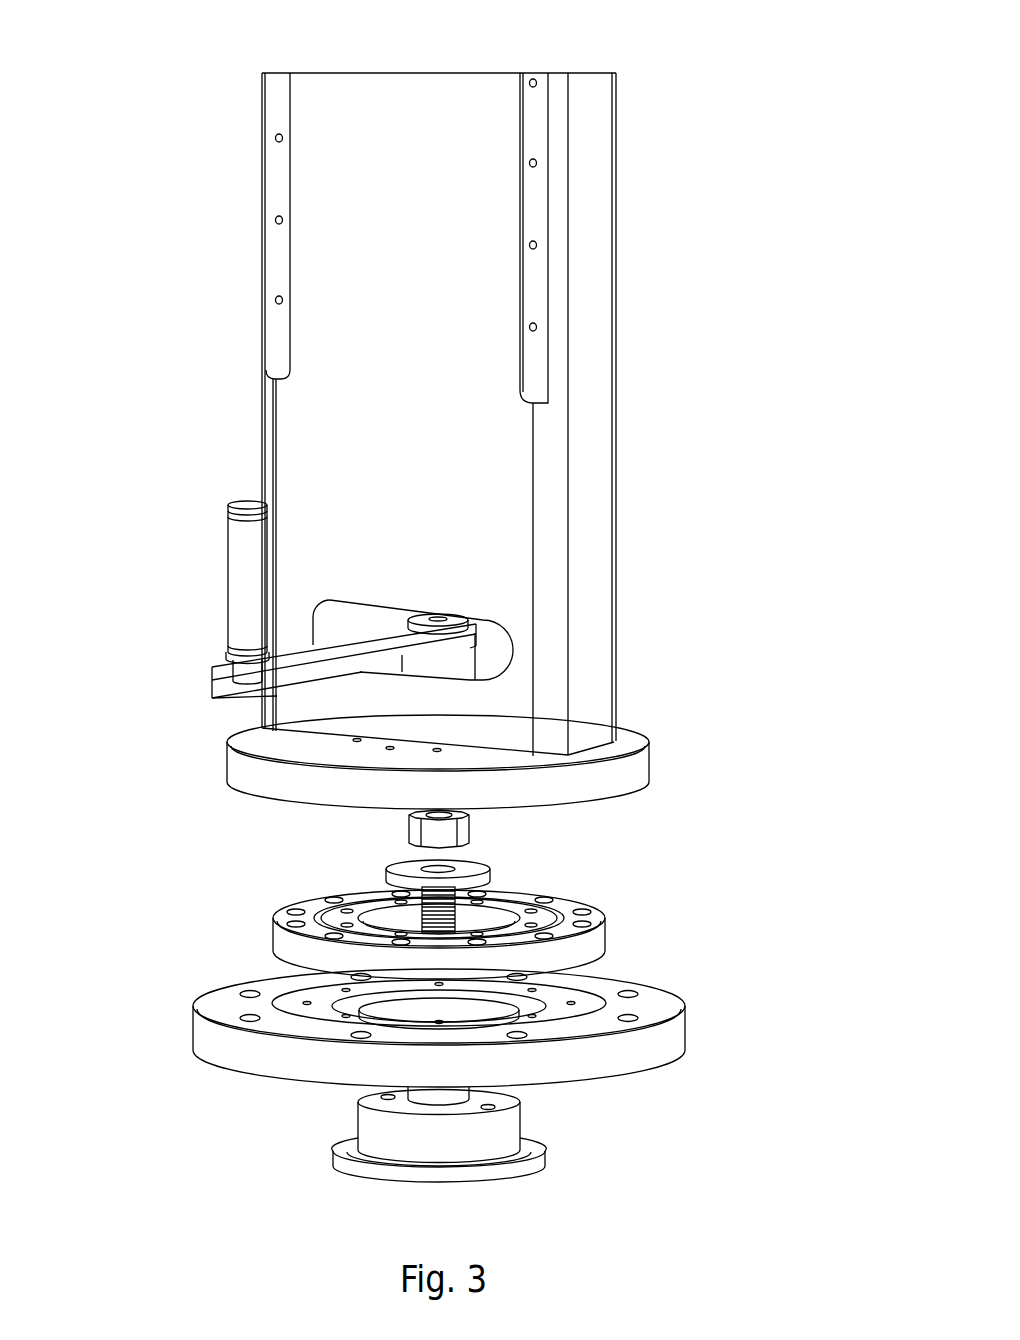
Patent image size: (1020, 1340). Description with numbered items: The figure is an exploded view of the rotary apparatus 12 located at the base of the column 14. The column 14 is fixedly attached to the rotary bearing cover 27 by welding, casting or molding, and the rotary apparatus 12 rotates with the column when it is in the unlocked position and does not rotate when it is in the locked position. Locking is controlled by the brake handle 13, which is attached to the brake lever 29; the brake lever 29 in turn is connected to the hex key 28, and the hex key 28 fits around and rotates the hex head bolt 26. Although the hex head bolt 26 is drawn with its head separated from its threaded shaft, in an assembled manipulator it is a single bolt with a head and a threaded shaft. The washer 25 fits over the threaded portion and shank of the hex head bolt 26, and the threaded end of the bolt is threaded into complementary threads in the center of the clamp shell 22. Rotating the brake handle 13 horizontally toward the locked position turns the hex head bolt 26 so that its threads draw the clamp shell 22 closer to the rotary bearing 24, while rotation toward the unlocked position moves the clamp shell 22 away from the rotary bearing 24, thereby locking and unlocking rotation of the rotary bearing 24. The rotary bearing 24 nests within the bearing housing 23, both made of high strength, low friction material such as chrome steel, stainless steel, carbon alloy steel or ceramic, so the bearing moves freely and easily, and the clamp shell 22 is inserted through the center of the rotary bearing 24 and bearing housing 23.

The rotary apparatus 12 is at (822, 113).
The brake handle 13 is at (225, 560).
The column 14 is at (443, 338).
The clamp shell 22 is at (528, 1122).
The bearing housing 23 is at (188, 1018).
The rotary bearing 24 is at (610, 938).
The washer 25 is at (380, 876).
The hex head bolt 26 is at (475, 828).
The rotary bearing cover 27 is at (615, 738).
The hex key 28 is at (447, 613).
The brake lever 29 is at (333, 650).